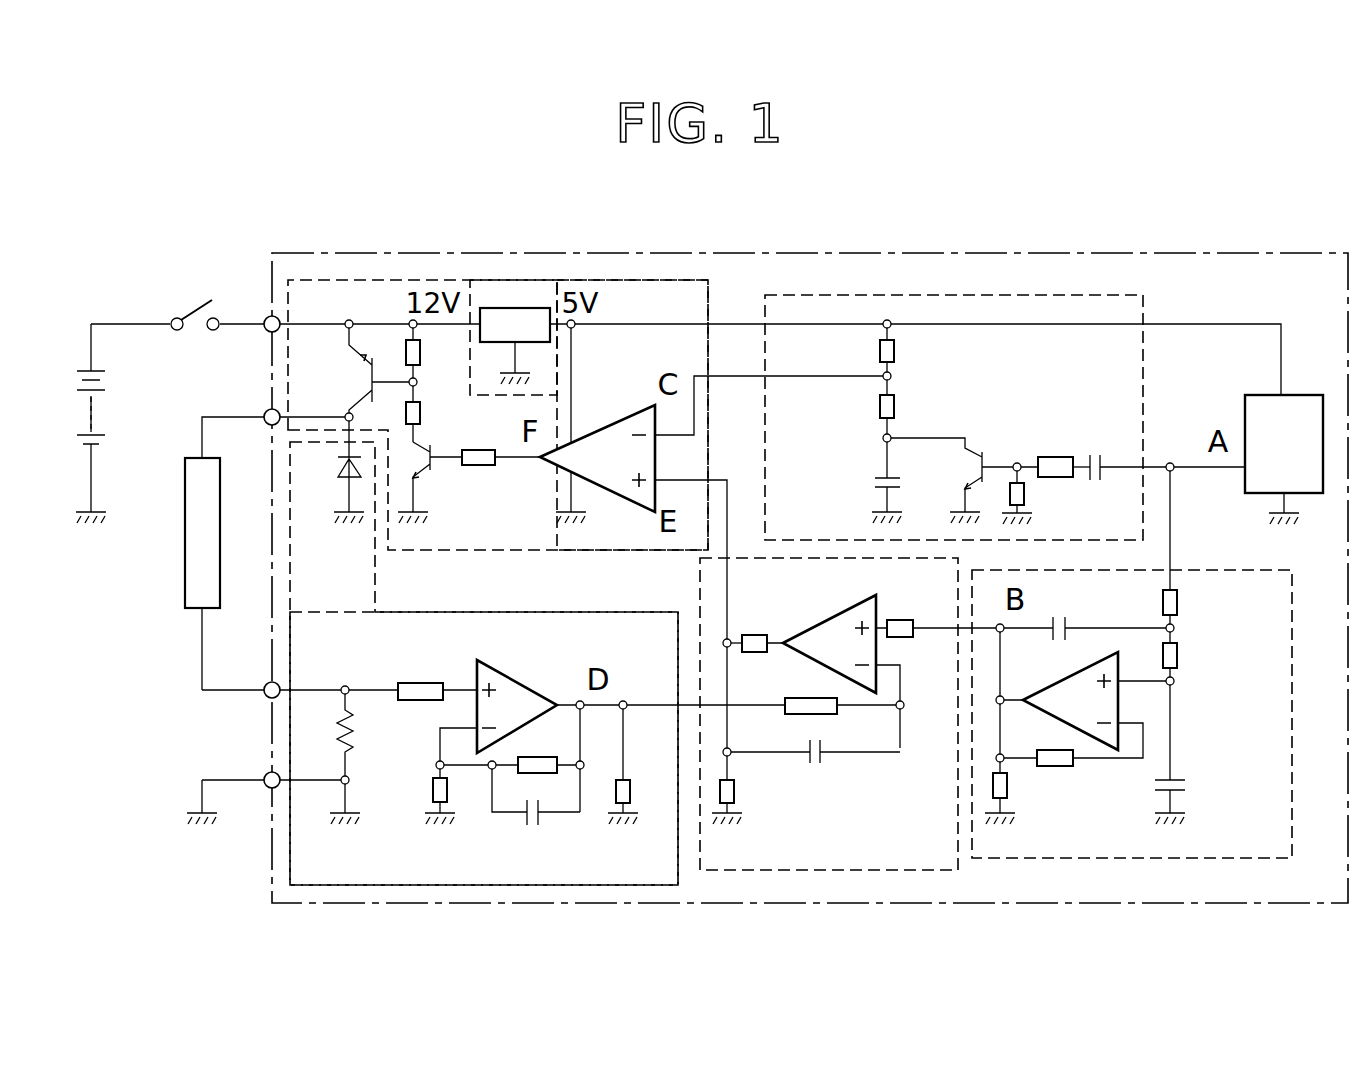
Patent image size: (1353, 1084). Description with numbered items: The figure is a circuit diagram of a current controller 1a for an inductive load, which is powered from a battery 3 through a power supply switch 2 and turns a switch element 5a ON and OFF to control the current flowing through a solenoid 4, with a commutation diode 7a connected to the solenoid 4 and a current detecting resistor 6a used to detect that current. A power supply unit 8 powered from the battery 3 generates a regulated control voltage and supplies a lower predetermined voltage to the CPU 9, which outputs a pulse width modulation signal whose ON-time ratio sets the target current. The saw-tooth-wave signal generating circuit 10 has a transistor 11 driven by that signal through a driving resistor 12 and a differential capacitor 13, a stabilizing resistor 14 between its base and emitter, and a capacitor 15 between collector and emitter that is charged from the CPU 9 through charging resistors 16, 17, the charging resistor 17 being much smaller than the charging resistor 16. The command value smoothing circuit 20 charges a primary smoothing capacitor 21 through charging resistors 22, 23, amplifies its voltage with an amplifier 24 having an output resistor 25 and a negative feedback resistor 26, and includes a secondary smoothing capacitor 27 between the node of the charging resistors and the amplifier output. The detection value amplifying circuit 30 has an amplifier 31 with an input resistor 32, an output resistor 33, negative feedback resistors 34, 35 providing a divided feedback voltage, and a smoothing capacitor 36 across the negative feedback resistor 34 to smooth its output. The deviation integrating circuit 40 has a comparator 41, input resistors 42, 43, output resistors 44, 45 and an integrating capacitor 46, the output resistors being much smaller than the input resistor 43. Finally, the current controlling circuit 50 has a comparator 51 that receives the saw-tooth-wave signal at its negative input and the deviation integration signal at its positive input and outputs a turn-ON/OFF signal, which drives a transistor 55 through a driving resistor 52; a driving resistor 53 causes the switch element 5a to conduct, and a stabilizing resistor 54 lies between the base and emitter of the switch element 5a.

The current controller 1a is at (850, 253).
The power supply switch 2 is at (188, 302).
The battery 3 is at (82, 415).
The solenoid 4 is at (185, 540).
The switch element 5a is at (365, 377).
The current detecting resistor 6a is at (340, 732).
The commutation diode 7a is at (340, 468).
The power supply unit 8 is at (515, 308).
The CPU 9 is at (1270, 395).
The saw-tooth-wave signal generating circuit 10 is at (965, 293).
The transistor 11 is at (982, 453).
The driving resistor 12 is at (1055, 457).
The differential capacitor 13 is at (1104, 455).
The stabilizing resistor 14 is at (1024, 494).
The capacitor 15 is at (877, 480).
The charging resistor 16 is at (877, 350).
The charging resistor 17 is at (877, 406).
The command value smoothing circuit 20 is at (1222, 568).
The primary smoothing capacitor 21 is at (1185, 787).
The charging resistor 22 is at (1178, 600).
The charging resistor 23 is at (1178, 657).
The amplifier 24 is at (1122, 702).
The output resistor 25 is at (1008, 788).
The negative feedback resistor 26 is at (1058, 768).
The secondary smoothing capacitor 27 is at (1067, 632).
The detection value amplifying circuit 30 is at (480, 612).
The amplifier 31 is at (510, 674).
The input resistor 32 is at (422, 683).
The output resistor 33 is at (630, 795).
The negative feedback resistor 34 is at (548, 775).
The negative feedback resistor 35 is at (436, 788).
The smoothing capacitor 36 is at (518, 815).
The deviation integrating circuit 40 is at (698, 578).
The comparator 41 is at (814, 630).
The input resistor 42 is at (901, 620).
The input resistor 43 is at (836, 715).
The output resistor 44 is at (756, 652).
The output resistor 45 is at (734, 792).
The integrating capacitor 46 is at (822, 765).
The current controlling circuit 50 is at (593, 280).
The comparator 51 is at (590, 432).
The driving resistor 52 is at (467, 489).
The driving resistor 53 is at (422, 412).
The stabilizing resistor 54 is at (405, 345).
The transistor 55 is at (434, 468).